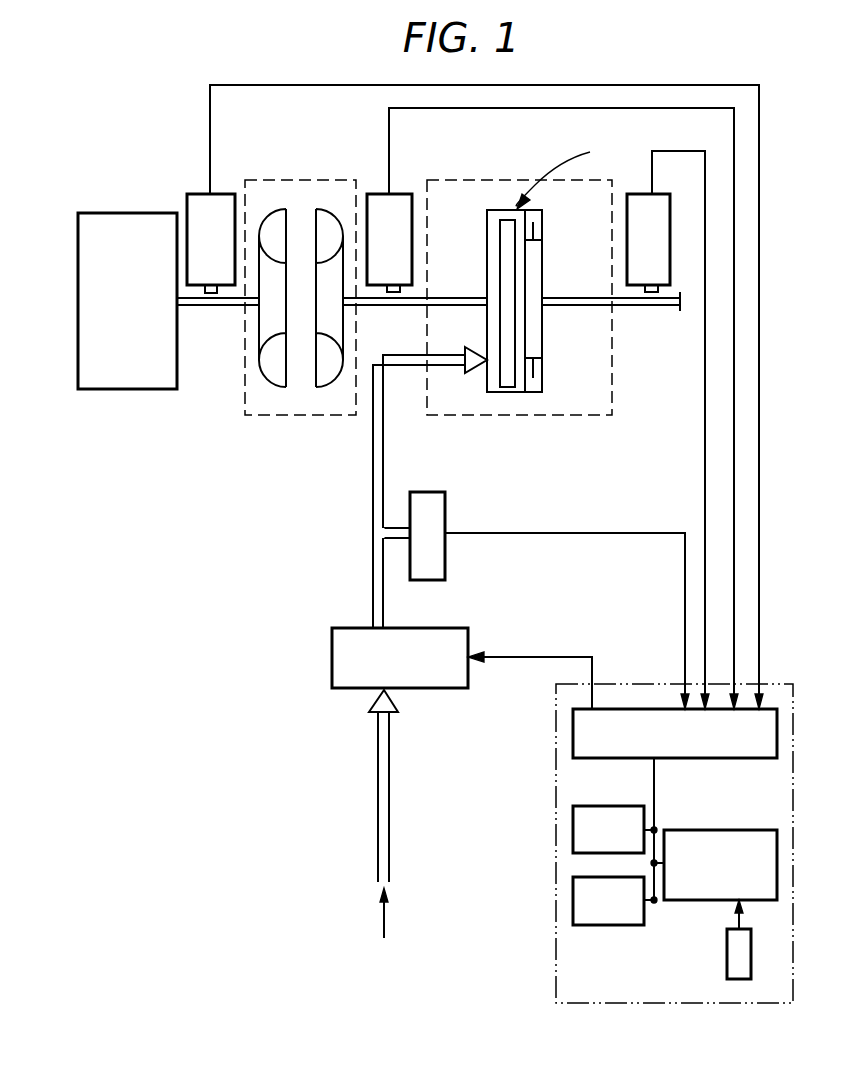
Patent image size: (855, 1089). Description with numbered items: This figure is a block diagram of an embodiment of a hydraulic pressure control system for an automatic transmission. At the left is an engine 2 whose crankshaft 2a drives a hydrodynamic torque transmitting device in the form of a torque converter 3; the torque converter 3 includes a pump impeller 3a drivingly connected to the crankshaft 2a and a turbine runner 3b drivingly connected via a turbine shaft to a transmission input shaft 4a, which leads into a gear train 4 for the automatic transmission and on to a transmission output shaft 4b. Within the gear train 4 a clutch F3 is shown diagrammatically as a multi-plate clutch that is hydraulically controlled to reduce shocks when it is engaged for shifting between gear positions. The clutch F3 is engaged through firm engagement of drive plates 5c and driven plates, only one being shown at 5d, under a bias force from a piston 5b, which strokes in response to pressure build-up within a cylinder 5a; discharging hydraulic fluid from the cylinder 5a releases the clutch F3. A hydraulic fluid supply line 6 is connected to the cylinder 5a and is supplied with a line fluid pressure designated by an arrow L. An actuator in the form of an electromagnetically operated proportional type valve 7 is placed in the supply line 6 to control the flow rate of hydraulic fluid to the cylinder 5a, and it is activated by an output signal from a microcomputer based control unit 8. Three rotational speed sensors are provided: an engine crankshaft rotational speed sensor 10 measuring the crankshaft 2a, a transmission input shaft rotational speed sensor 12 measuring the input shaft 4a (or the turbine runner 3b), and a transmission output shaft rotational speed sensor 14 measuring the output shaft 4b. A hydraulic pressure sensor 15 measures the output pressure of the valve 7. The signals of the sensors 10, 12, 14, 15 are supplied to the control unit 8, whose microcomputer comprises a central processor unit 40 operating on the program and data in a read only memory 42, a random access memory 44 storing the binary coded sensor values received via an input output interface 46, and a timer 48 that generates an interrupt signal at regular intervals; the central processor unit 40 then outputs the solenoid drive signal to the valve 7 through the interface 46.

The engine 2 is at (127, 212).
The crankshaft 2a is at (215, 307).
The torque converter 3 is at (289, 178).
The pump impeller 3a is at (277, 375).
The turbine runner 3b is at (331, 375).
The gear train 4 is at (493, 178).
The transmission input shaft 4a is at (392, 306).
The transmission output shaft 4b is at (637, 306).
The cylinder 5a is at (517, 393).
The piston 5b is at (510, 352).
The drive plates 5c is at (543, 232).
The driven plate 5d is at (545, 265).
The clutch F3 is at (566, 167).
The hydraulic fluid supply line 6 is at (383, 450).
The electromagnetically operated proportional type valve 7 is at (350, 628).
The control unit 8 is at (555, 780).
The engine crankshaft rotational speed sensor 10 is at (197, 194).
The transmission input shaft rotational speed sensor 12 is at (398, 194).
The transmission output shaft rotational speed sensor 14 is at (657, 194).
The hydraulic pressure sensor 15 is at (447, 503).
The central processor unit 40 is at (718, 830).
The read only memory 42 is at (603, 806).
The random access memory 44 is at (618, 926).
The input output interface 46 is at (697, 758).
The timer 48 is at (728, 946).
The line fluid pressure L is at (385, 920).